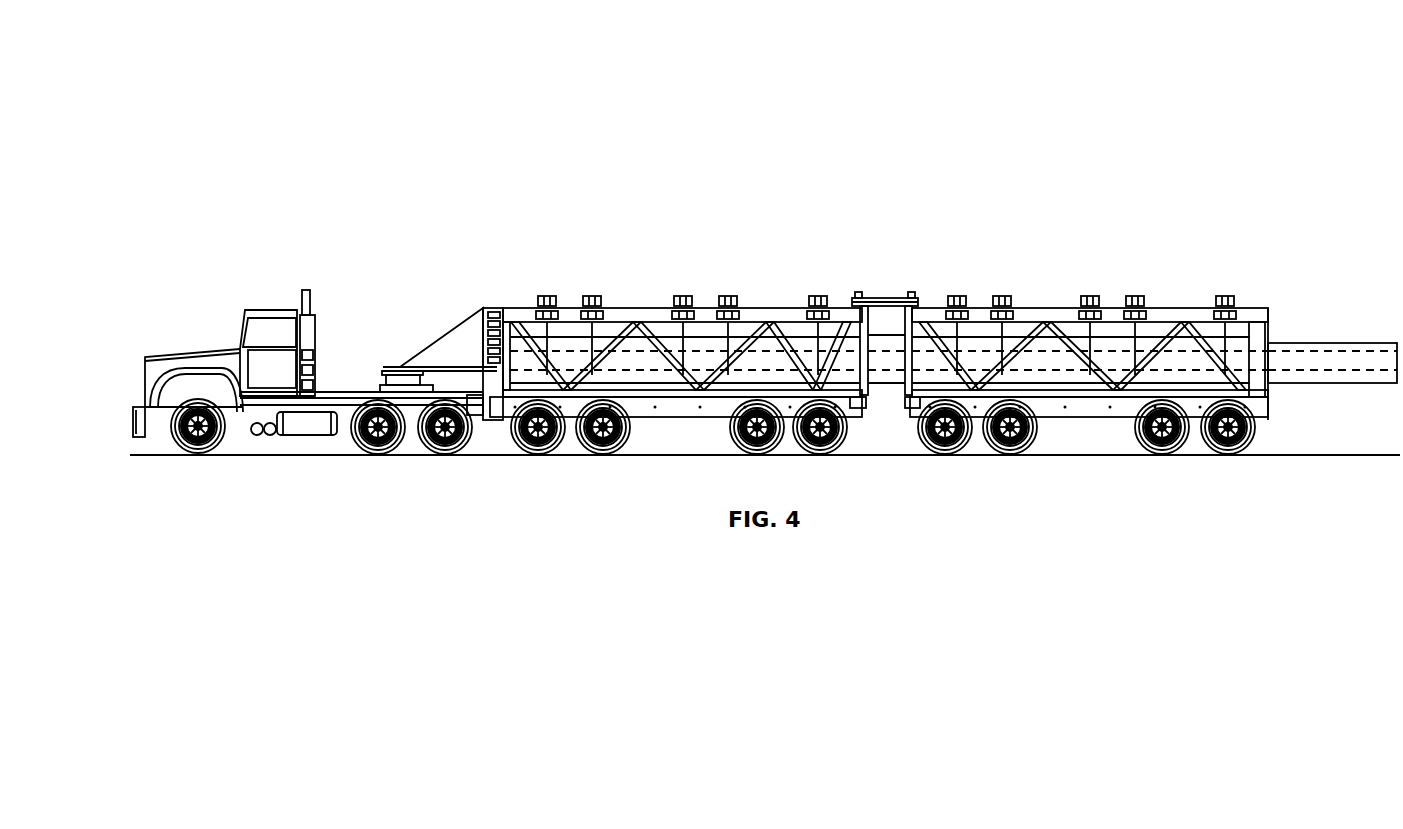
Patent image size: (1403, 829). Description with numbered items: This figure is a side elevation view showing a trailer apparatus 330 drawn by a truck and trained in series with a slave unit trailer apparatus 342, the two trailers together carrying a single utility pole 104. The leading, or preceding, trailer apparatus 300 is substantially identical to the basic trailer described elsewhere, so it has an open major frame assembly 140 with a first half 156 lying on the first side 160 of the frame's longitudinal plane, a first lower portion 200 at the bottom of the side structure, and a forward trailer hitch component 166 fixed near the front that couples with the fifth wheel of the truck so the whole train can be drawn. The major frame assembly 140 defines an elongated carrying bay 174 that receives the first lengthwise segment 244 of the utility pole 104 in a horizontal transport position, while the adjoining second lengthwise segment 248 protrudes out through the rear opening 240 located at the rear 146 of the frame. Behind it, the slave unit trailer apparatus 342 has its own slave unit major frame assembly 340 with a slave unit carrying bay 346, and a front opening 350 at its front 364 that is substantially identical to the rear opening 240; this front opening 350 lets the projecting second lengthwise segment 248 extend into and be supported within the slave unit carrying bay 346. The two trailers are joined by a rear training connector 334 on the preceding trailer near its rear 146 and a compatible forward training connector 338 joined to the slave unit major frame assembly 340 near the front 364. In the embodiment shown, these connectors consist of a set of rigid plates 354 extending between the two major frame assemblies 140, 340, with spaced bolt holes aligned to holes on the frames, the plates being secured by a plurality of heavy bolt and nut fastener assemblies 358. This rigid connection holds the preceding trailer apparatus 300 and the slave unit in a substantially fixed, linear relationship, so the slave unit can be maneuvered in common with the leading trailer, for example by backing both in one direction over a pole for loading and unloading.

The utility pole 104 is at (1302, 365).
The major frame assembly 140 is at (613, 307).
The rear 146 is at (740, 322).
The first half 156 is at (670, 412).
The first side 160 is at (943, 466).
The forward trailer hitch component 166 is at (403, 367).
The carrying bay 174 is at (1008, 296).
The first lower portion 200 is at (880, 471).
The rear opening 240 is at (864, 394).
The first lengthwise segment 244 is at (710, 342).
The second lengthwise segment 248 is at (971, 345).
The preceding trailer apparatus 300 is at (652, 308).
The trailer apparatus 330 is at (1067, 313).
The rear training connector 334 is at (866, 283).
The forward training connector 338 is at (890, 292).
The slave unit major frame assembly 340 is at (1182, 315).
The slave unit trailer apparatus 342 is at (1047, 315).
The slave unit carrying bay 346 is at (1107, 333).
The front opening 350 is at (897, 395).
The rigid plates 354 is at (884, 281).
The heavy bolt and nut fastener assemblies 358 is at (839, 171).
The front 364 is at (918, 281).